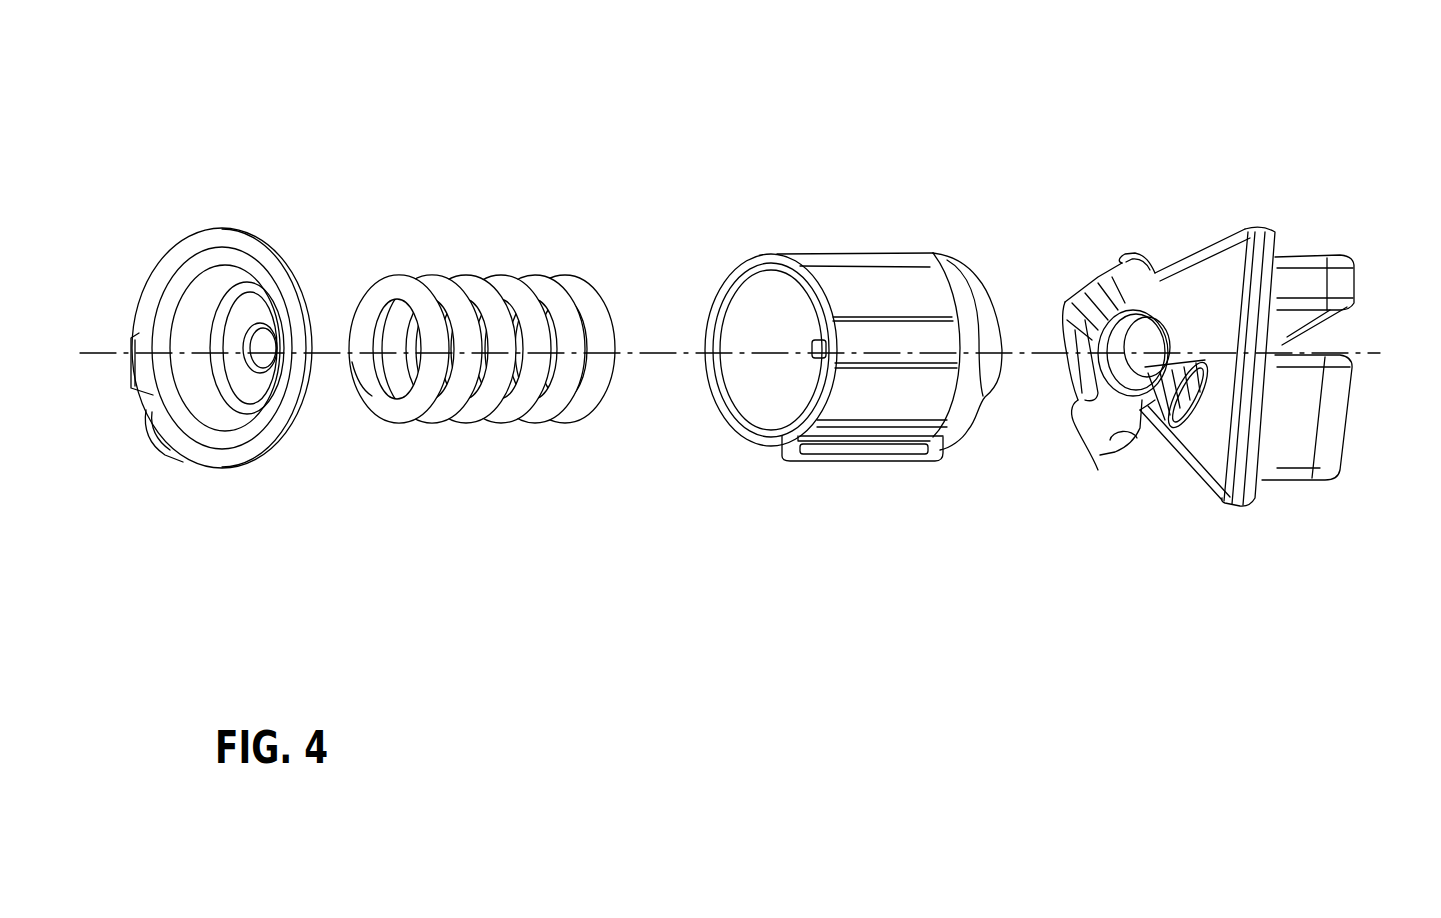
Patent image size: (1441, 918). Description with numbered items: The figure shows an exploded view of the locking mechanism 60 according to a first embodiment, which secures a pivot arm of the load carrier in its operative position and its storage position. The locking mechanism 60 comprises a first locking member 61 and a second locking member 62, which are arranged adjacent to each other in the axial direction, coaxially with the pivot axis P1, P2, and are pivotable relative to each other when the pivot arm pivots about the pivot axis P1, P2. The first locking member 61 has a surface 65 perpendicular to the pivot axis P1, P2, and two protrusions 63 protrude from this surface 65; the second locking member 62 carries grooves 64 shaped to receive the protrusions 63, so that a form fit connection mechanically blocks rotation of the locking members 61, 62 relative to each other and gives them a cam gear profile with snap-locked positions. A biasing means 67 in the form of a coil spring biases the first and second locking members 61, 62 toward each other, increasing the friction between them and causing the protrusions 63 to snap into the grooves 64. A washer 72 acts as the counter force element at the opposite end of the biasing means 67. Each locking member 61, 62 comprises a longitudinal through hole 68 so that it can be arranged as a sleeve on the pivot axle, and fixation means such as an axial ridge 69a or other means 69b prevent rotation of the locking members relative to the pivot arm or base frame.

The locking mechanism 60 is at (1237, 105).
The first locking member 61 is at (1247, 543).
The second locking member 62 is at (792, 482).
The protrusion 63 is at (1142, 403).
The groove 64 is at (947, 262).
The surface 65 is at (1232, 308).
The biasing means 67 is at (503, 278).
The longitudinal through hole 68 is at (1145, 333).
The ridge 69a is at (860, 448).
The other fixation means 69b is at (1342, 283).
The washer 72 is at (253, 238).
The pivot axis P1 is at (135, 436).
The pivot axis P2 is at (92, 353).